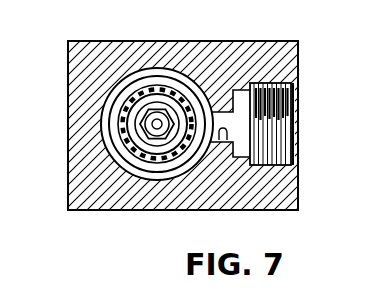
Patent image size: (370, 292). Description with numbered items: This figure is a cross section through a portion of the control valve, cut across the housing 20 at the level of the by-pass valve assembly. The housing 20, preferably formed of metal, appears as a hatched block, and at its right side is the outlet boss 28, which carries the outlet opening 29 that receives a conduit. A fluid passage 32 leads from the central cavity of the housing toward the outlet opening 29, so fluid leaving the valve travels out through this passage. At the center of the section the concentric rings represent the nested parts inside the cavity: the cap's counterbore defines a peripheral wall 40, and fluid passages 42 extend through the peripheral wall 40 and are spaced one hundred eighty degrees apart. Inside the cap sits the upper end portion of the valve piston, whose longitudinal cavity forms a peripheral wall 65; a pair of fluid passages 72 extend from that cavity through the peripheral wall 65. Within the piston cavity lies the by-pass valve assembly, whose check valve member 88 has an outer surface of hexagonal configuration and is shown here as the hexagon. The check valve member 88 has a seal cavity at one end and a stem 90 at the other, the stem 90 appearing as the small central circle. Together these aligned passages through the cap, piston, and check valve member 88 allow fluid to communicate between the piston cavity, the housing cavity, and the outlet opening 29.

The housing 20 is at (82, 77).
The outlet boss 28 is at (274, 50).
The outlet opening 29 is at (282, 163).
The fluid passage 32 is at (226, 141).
The peripheral wall 40 is at (156, 154).
The fluid passages 42 is at (128, 124).
The peripheral wall 65 is at (158, 124).
The fluid passages 72 is at (120, 91).
The check valve member 88 is at (150, 165).
The stem 90 is at (119, 158).